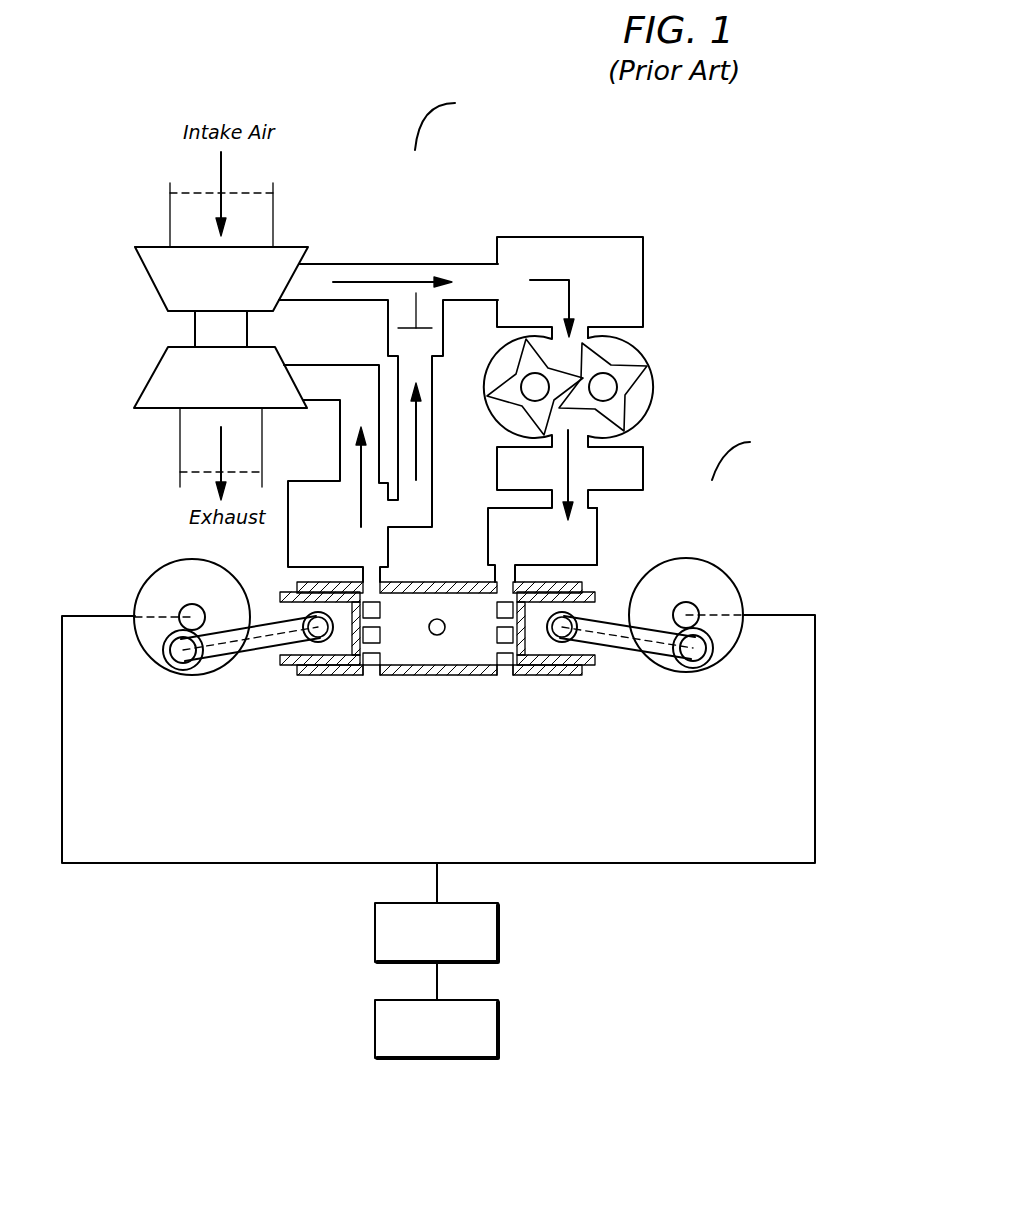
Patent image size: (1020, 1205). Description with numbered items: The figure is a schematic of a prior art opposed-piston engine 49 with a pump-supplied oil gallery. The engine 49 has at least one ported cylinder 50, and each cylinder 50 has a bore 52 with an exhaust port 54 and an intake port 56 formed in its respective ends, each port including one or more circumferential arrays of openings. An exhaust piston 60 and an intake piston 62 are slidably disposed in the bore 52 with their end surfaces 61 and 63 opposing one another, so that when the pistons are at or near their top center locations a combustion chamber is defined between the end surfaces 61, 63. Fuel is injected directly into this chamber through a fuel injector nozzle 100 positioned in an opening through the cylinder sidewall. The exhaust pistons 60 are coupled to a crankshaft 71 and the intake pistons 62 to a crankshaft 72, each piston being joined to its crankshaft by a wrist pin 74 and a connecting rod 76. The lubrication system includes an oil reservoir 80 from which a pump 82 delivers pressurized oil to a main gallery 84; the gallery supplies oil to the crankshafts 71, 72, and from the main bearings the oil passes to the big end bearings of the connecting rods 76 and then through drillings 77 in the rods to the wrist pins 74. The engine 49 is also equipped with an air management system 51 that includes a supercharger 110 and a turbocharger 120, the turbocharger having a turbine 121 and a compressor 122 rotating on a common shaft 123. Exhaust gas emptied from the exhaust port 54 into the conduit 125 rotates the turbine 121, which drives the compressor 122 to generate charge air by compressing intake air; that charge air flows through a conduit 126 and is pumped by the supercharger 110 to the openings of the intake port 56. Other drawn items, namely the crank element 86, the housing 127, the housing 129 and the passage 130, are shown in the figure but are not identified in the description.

The opposed-piston engine 49 is at (745, 453).
The ported cylinder 50 is at (439, 633).
The air management system 51 is at (449, 121).
The bore 52 is at (457, 660).
The exhaust port 54 is at (370, 690).
The intake port 56 is at (505, 690).
The exhaust piston 60 is at (283, 670).
The end surface of exhaust piston 61 is at (372, 605).
The intake piston 62 is at (584, 588).
The end surface of intake piston 63 is at (503, 605).
The crankshaft 71 is at (171, 636).
The crankshaft 72 is at (685, 673).
The wrist pin 74 is at (305, 622).
The connecting rod 76 is at (236, 663).
The drillings in connecting rod 77 is at (257, 640).
The oil reservoir 80 is at (500, 1030).
The pump 82 is at (500, 932).
The main gallery 84 is at (210, 866).
The crank throw 86 is at (160, 615).
The fuel injector nozzle 100 is at (443, 619).
The supercharger 110 is at (642, 343).
The turbocharger 120 is at (205, 326).
The turbine 121 is at (155, 375).
The compressor 122 is at (148, 272).
The common shaft 123 is at (247, 327).
The conduit 125 is at (342, 428).
The conduit 126 is at (375, 264).
The charge air cooler 127 is at (645, 291).
The second charge air cooler 129 is at (645, 456).
The intake channel 130 is at (597, 545).